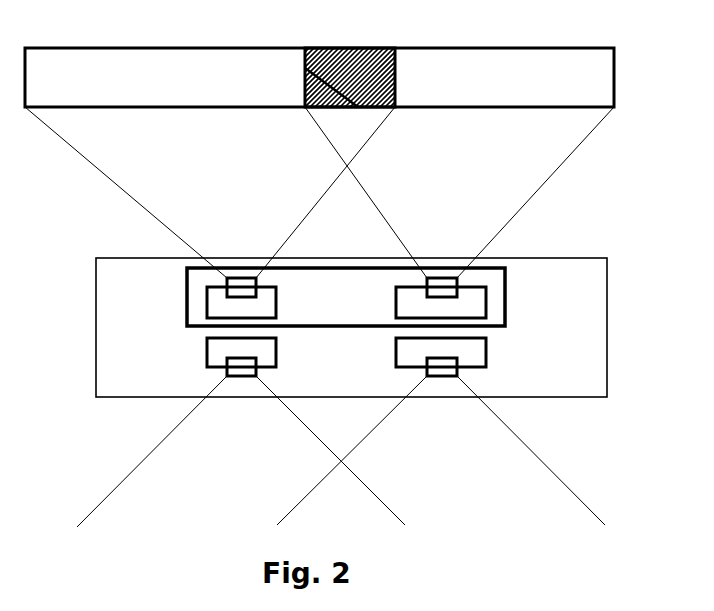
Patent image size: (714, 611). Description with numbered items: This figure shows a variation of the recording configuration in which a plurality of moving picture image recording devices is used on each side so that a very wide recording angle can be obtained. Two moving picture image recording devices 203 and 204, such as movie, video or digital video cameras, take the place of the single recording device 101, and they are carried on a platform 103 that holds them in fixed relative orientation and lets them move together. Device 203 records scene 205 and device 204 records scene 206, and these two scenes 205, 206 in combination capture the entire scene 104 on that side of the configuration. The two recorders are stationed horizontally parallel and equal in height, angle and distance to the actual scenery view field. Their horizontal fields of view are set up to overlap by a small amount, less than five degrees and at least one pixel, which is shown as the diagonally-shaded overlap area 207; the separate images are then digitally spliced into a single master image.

The moving picture image recording device 101 is at (505, 297).
The platform 103 is at (145, 357).
The scene 104 is at (183, 48).
The moving picture image recording device 203 is at (222, 308).
The moving picture image recording device 204 is at (415, 308).
The scene 205 is at (199, 89).
The scene 206 is at (481, 89).
The overlap area 207 is at (335, 48).